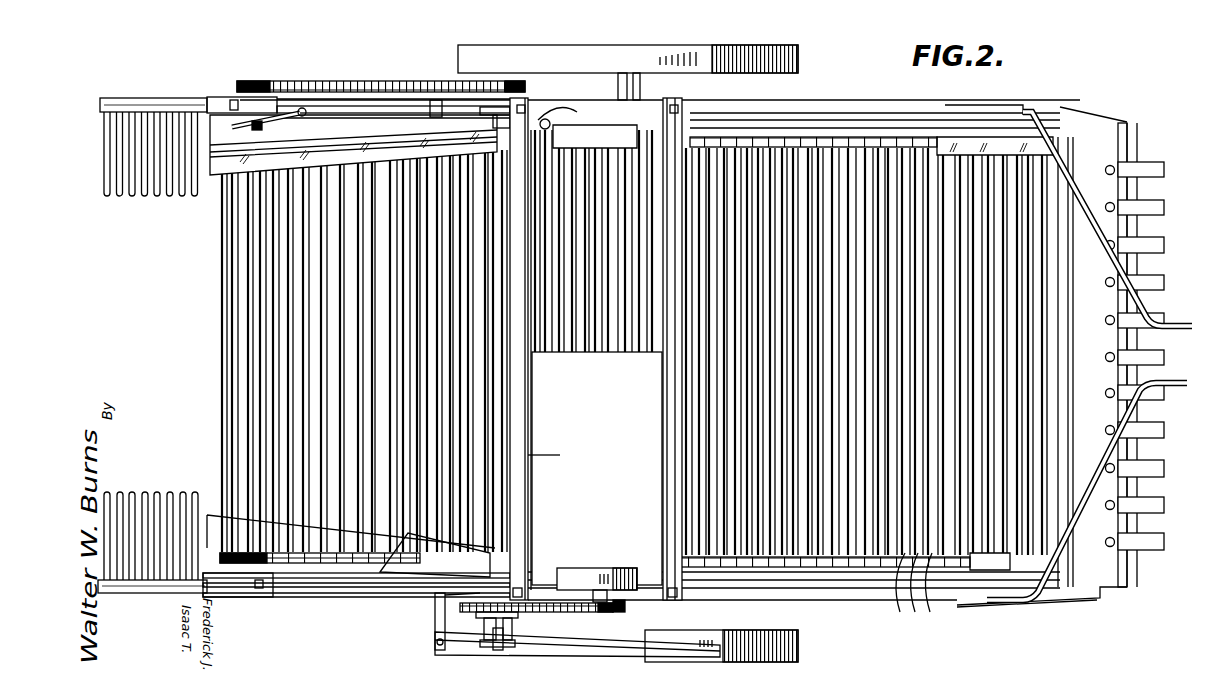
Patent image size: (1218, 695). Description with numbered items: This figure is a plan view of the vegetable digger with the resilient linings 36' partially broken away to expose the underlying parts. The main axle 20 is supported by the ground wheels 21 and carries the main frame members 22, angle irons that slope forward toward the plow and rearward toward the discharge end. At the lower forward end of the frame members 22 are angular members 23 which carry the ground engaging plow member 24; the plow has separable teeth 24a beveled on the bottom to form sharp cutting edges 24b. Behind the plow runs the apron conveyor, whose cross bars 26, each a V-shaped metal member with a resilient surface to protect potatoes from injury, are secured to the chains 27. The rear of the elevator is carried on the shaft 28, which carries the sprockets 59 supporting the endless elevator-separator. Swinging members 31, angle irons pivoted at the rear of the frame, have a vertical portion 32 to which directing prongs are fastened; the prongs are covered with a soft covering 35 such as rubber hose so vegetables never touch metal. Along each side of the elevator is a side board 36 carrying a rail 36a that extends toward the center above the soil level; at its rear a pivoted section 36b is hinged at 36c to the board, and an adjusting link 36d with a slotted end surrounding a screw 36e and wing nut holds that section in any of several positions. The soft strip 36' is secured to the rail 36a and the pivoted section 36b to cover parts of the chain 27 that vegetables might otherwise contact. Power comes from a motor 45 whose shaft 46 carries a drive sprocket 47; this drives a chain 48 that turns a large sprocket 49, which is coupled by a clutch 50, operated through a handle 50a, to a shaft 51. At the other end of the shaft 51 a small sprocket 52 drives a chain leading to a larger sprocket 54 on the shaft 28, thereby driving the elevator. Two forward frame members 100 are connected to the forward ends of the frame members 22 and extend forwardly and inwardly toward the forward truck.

The main axle 20 is at (641, 80).
The ground wheels 21 is at (700, 50).
The main frame member 22 is at (782, 93).
The angular members 23 is at (1036, 600).
The plow member 24 is at (1118, 132).
The separable teeth 24a is at (1150, 503).
The sharp cutting edges 24b is at (1160, 428).
The cross bar 26 is at (908, 594).
The chains 27 is at (820, 137).
The shaft 28 is at (258, 82).
The swinging members 31 is at (150, 98).
The vertical portion 32 is at (215, 97).
The soft covering 35 is at (172, 198).
The side board 36 is at (356, 336).
The rail 36a is at (853, 135).
The pivoted section 36b is at (362, 110).
The pivot 36c is at (587, 126).
The adjusting link 36d is at (298, 118).
The screw 36e is at (257, 127).
The resilient linings 36' is at (636, 334).
The motor 45 is at (597, 468).
The shaft 46 is at (592, 590).
The drive sprocket 47 is at (618, 600).
The chain 48 is at (560, 612).
The large sprocket 49 is at (458, 608).
The clutch 50 is at (480, 620).
The handle 50a is at (652, 655).
The shaft 51 is at (505, 672).
The small sprocket 52 is at (528, 88).
The larger sprocket 54 is at (282, 80).
The sprockets 59 is at (450, 88).
The forward frame members 100 is at (1078, 208).